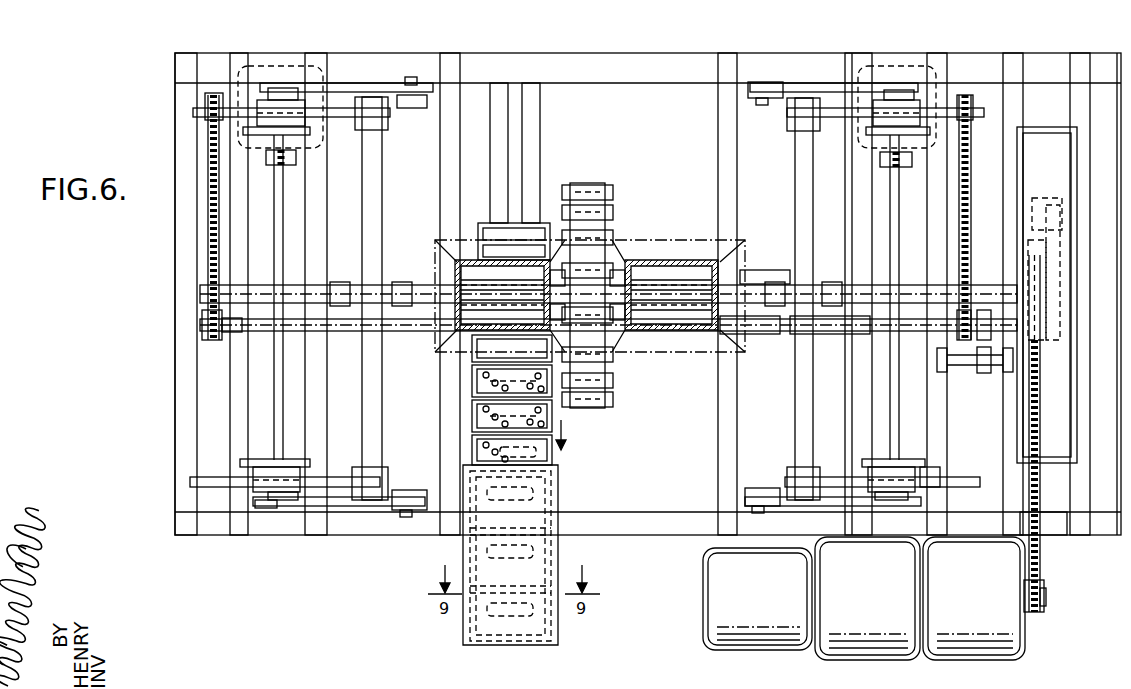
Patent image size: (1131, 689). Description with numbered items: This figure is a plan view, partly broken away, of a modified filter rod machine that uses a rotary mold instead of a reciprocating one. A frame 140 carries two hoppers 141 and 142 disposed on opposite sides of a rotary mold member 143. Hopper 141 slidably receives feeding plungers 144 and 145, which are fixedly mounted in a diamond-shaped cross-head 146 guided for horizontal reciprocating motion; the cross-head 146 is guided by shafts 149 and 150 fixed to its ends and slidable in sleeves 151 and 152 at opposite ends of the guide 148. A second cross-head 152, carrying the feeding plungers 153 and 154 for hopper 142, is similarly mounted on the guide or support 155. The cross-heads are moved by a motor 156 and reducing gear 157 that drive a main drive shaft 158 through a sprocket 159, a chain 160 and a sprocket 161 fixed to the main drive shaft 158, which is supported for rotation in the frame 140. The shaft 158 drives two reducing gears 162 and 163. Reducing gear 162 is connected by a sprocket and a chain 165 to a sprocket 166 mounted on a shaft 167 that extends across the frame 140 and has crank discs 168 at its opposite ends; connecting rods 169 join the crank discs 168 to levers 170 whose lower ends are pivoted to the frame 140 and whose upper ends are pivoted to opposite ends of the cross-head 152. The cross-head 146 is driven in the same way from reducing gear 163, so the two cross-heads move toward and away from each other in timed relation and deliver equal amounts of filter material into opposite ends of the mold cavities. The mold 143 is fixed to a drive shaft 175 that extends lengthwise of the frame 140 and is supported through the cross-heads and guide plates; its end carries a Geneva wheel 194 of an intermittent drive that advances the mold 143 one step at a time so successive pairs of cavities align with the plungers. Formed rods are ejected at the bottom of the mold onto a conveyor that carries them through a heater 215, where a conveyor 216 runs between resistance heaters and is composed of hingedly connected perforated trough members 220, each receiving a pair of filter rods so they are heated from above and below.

The frame 140 is at (643, 47).
The hopper 141 is at (463, 262).
The hopper 142 is at (665, 262).
The rotary mold member 143 is at (585, 200).
The feeding plunger 144 is at (405, 283).
The feeding plunger 145 is at (405, 318).
The cross-head 146 is at (382, 171).
The guide 148 is at (240, 394).
The shaft 149 is at (337, 478).
The shaft 150 is at (343, 118).
The sleeve 151 is at (287, 492).
The cross-head 152 is at (290, 100).
The feeding plunger 153 is at (752, 280).
The feeding plunger 154 is at (768, 320).
The guide 155 is at (930, 423).
The motor 156 is at (708, 595).
The reducing gear 157 is at (975, 656).
The main drive shaft 158 is at (830, 332).
The sprocket 159 is at (1045, 612).
The chain 160 is at (1041, 557).
The sprocket 161 is at (1018, 297).
The reducing gear 162 is at (935, 66).
The reducing gear 163 is at (266, 68).
The chain 165 is at (880, 158).
The sprocket 166 is at (886, 168).
The shaft 167 is at (890, 383).
The crank disc 168 is at (268, 505).
The connecting rod 169 is at (345, 506).
The lever 170 is at (410, 512).
The drive shaft 175 is at (808, 292).
The Geneva wheel 194 is at (1022, 253).
The heater 215 is at (463, 632).
The conveyor 216 is at (459, 423).
The perforated trough member 220 is at (472, 385).